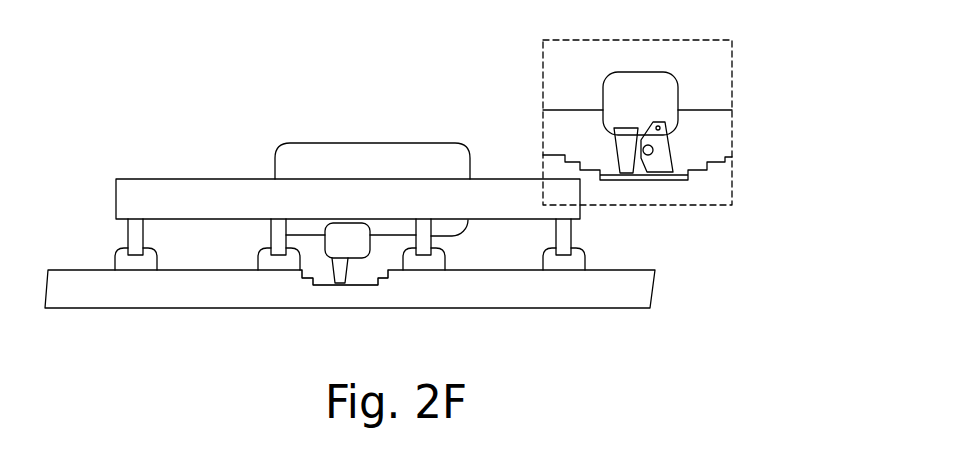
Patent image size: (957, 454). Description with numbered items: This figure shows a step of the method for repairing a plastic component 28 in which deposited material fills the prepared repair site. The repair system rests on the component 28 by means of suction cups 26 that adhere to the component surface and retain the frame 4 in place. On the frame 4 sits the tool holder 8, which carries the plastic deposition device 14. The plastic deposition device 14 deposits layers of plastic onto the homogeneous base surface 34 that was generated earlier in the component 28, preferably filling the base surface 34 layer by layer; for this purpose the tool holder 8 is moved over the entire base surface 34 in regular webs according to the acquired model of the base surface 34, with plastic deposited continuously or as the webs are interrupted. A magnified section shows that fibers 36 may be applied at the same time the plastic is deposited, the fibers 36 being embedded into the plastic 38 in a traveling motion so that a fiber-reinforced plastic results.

The frame 4 is at (182, 198).
The tool holder 8 is at (365, 172).
The plastic deposition device 14 is at (355, 247).
The suction cups 26 is at (123, 257).
The component 28 is at (603, 295).
The base surface 34 is at (393, 255).
The fibers 36 is at (670, 180).
The plastic 38 is at (610, 180).